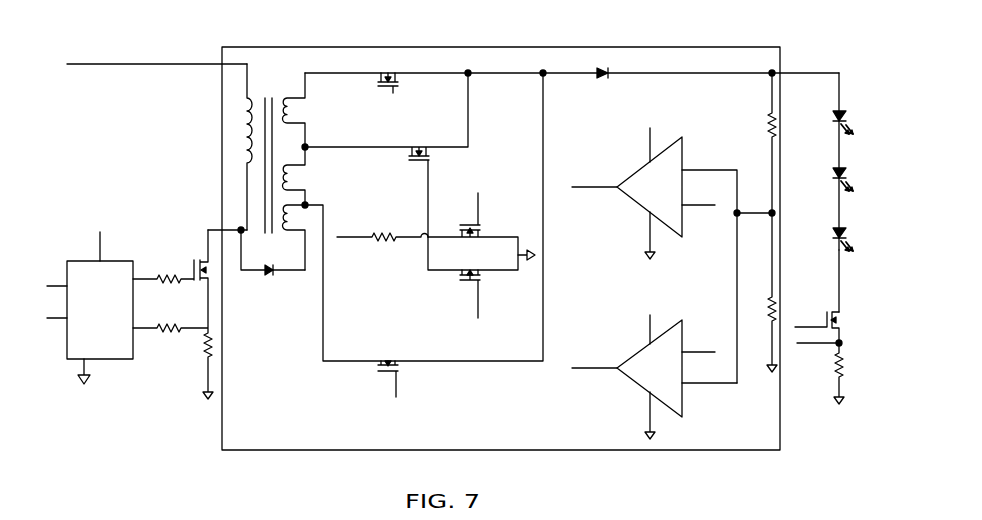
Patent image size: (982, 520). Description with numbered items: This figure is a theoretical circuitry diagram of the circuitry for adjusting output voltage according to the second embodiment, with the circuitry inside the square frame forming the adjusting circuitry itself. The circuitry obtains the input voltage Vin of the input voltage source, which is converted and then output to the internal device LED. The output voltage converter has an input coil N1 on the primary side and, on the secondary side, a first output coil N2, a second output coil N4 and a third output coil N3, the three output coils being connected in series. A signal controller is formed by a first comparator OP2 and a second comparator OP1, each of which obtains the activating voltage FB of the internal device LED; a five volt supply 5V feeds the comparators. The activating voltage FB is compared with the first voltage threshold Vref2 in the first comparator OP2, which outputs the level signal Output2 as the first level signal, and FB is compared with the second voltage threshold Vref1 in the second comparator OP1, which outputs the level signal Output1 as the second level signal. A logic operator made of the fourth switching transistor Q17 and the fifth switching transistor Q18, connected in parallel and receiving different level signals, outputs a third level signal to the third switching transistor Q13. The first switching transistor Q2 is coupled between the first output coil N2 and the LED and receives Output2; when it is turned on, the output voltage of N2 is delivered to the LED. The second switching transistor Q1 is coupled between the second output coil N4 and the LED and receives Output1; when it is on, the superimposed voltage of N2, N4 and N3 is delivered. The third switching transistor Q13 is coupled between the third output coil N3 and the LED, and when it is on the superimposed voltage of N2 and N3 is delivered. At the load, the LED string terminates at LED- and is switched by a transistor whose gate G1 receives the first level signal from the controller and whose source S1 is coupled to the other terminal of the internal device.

The input voltage Vin is at (192, 57).
The input coil N1 is at (245, 110).
The first output coil N2 is at (293, 236).
The third output coil N3 is at (292, 178).
The second output coil N4 is at (292, 112).
The second switching transistor Q1 is at (384, 71).
The first switching transistor Q2 is at (388, 354).
The third switching transistor Q13 is at (413, 141).
The fourth switching transistor Q17 is at (480, 233).
The fifth switching transistor Q18 is at (472, 284).
The 5V supply 5V is at (498, 272).
The second level signal Output1 is at (393, 92).
The first level signal Output2 is at (483, 194).
The second comparator OP1 is at (677, 260).
The first comparator OP2 is at (677, 368).
The second voltage threshold Vref1 is at (707, 207).
The first voltage threshold Vref2 is at (700, 348).
The activating voltage FB is at (754, 203).
The LED string negative terminal LED- is at (867, 281).
The gate G1 is at (62, 283).
The source S1 is at (60, 323).